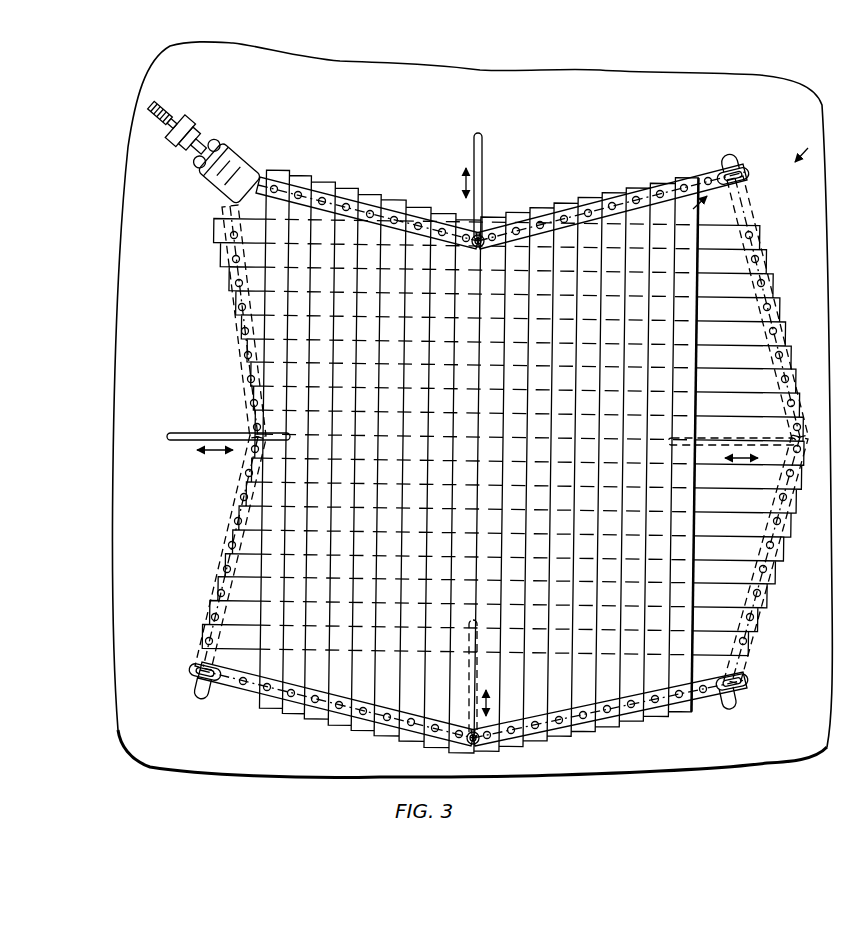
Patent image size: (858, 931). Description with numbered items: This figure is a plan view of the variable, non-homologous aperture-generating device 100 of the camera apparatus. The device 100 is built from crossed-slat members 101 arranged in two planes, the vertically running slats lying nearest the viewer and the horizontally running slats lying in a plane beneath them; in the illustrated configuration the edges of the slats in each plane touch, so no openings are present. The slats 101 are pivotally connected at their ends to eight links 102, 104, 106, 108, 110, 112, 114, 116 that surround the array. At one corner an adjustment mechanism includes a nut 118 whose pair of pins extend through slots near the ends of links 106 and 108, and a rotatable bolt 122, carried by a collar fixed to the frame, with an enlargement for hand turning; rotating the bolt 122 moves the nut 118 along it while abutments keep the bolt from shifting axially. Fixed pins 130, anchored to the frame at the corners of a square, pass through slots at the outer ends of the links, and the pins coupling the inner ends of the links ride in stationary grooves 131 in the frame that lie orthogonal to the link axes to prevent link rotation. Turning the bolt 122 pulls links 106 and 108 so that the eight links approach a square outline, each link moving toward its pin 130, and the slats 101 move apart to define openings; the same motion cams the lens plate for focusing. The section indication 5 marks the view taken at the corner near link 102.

The adjustable lattice apparatus 100 is at (447, 178).
The slats 101 is at (600, 180).
The upper right strut 102 is at (708, 178).
The right upper side strut 104 is at (740, 208).
The right lower side strut 106 is at (742, 676).
The lower right strut 108 is at (707, 708).
The lower left strut 110 is at (243, 688).
The left lower side strut 112 is at (210, 662).
The left upper side strut 114 is at (235, 218).
The upper left strut 116 is at (263, 178).
The clamp 118 is at (222, 198).
The adjusting knob 122 is at (168, 105).
The pivot connections 130 is at (748, 168).
The guide rods 131 is at (484, 200).
The section line 5- 5 is at (754, 176).